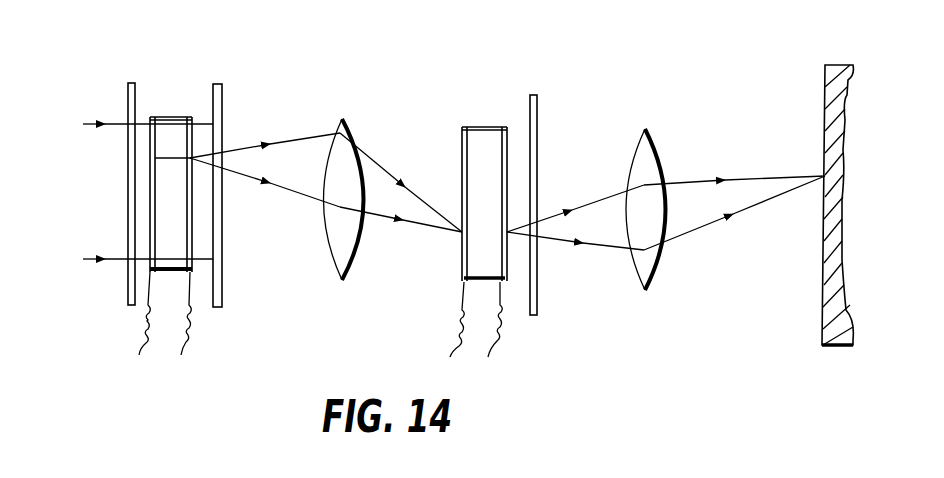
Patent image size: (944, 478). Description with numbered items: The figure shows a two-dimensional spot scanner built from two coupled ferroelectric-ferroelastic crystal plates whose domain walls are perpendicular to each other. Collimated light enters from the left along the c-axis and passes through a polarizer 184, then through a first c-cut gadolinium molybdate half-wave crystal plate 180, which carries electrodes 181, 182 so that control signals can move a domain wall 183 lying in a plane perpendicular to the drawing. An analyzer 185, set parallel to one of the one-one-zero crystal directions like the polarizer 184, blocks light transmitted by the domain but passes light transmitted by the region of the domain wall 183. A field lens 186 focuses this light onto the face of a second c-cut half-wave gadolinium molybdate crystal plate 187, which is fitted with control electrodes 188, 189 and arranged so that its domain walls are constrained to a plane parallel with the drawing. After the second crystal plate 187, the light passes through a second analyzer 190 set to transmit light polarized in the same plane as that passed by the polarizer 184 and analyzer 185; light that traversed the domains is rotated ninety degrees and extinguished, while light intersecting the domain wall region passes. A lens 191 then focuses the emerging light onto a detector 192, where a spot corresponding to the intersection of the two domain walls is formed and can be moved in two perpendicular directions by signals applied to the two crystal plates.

The first c-cut gadolinium molybdate half-wave crystal plate 180 is at (172, 267).
The electrode 181 is at (152, 117).
The electrode 182 is at (190, 117).
The domain wall 183 is at (168, 157).
The polarizer 184 is at (128, 94).
The analyzer 185 is at (223, 92).
The field lens 186 is at (342, 119).
The second c-cut half-wave gadolinium molybdate crystal plate 187 is at (478, 129).
The control electrode 188 is at (462, 142).
The control electrode 189 is at (505, 130).
The second analyzer 190 is at (537, 108).
The lens 191 is at (645, 129).
The detector 192 is at (825, 100).